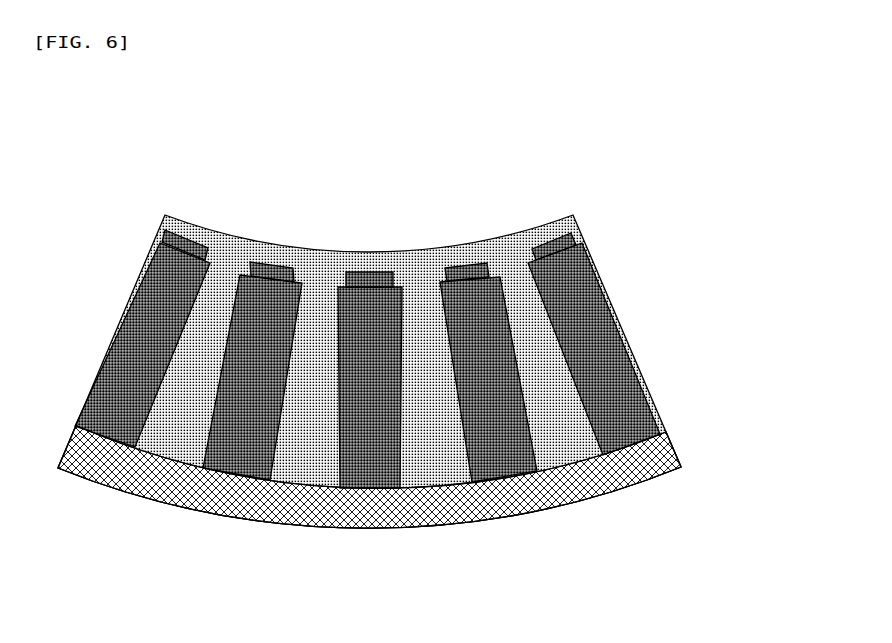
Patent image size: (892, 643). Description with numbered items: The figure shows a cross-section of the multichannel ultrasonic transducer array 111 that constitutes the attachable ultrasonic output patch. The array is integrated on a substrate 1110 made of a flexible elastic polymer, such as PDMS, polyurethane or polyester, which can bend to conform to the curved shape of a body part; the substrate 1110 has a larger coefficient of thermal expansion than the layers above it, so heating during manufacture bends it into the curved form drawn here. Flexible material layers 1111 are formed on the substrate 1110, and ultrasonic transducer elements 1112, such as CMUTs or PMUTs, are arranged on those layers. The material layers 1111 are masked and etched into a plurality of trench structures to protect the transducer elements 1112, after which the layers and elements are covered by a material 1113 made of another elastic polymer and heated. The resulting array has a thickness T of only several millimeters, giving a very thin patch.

The multichannel ultrasonic transducer array 111 is at (433, 347).
The substrate 1110 is at (678, 442).
The flexible material layers 1111 is at (615, 300).
The ultrasonic transducer elements 1112 is at (546, 220).
The material 1113 is at (572, 443).
The thickness T is at (153, 210).